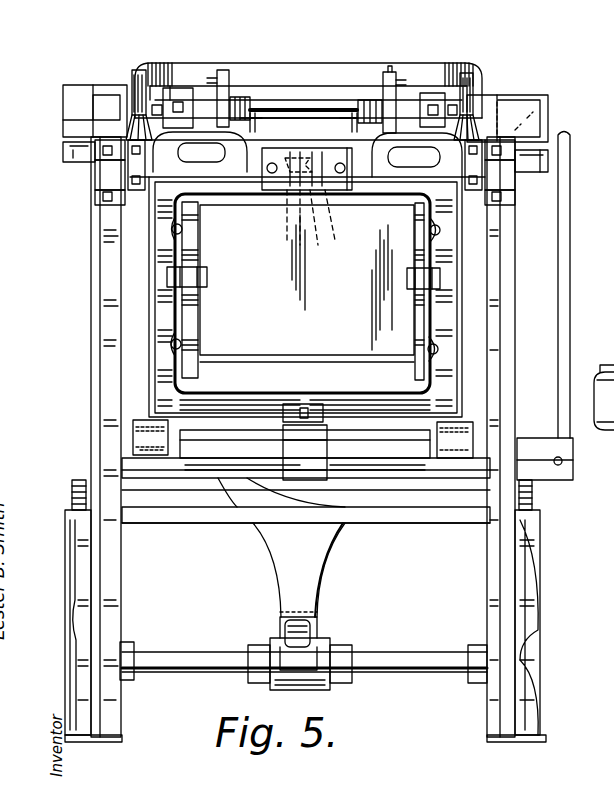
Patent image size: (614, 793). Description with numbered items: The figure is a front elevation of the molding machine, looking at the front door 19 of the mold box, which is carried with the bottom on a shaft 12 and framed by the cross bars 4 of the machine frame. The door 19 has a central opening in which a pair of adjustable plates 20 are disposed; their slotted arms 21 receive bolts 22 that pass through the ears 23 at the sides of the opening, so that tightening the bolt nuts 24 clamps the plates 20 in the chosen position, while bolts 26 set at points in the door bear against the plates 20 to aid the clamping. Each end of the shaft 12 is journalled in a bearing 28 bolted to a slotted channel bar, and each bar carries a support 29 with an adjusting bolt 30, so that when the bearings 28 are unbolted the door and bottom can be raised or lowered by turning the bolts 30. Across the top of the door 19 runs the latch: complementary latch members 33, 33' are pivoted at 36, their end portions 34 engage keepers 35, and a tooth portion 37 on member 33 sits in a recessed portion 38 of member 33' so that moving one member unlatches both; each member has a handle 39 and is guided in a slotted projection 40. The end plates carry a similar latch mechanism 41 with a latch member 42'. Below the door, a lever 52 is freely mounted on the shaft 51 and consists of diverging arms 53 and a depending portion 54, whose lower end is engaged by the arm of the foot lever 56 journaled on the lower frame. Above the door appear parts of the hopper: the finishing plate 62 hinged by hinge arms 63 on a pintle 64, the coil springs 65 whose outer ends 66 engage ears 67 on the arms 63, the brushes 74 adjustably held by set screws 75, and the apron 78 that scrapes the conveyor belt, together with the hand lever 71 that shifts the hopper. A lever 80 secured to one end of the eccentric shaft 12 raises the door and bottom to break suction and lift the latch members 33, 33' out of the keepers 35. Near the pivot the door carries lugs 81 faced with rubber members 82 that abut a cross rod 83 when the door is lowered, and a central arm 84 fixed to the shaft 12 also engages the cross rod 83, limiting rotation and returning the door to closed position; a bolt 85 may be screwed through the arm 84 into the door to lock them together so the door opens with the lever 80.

The cross bars 4 is at (120, 117).
The shaft 12 is at (412, 465).
The door 19 is at (165, 370).
The adjustable plates 20 is at (195, 318).
The slotted arms 21 is at (196, 240).
The bolts 22 is at (168, 277).
The ears 23 is at (185, 257).
The bolt nuts 24 is at (207, 277).
The bolts 26 is at (197, 345).
The bearing 28 is at (527, 440).
The support 29 is at (80, 594).
The adjusting bolt 30 is at (72, 493).
The latch member 33 is at (282, 215).
The latch member 33' is at (342, 215).
The end portion 34 is at (98, 168).
The keeper 35 is at (98, 192).
The pivot 36 is at (338, 165).
The tooth portion 37 is at (305, 222).
The recessed portion 38 is at (326, 228).
The handle 39 is at (350, 112).
The slotted projections 40 is at (555, 107).
The latch mechanism 41 is at (548, 155).
The latch member 42' is at (48, 168).
The shaft 51 is at (277, 622).
The lever 52 is at (283, 570).
The diverging arms 53 is at (230, 492).
The depending portion 54 is at (318, 604).
The foot lever 56 is at (325, 628).
The finishing plate 62 is at (362, 190).
The hinge arms 63 is at (232, 107).
The pintle 64 is at (303, 108).
The coil springs 65 is at (233, 140).
The spring outer end 66 is at (378, 85).
The ear 67 is at (396, 75).
The hand lever 71 is at (605, 352).
The brushes 74 is at (140, 112).
The set screw 75 is at (152, 88).
The apron 78 is at (205, 63).
The lever 80 is at (570, 292).
The lugs 81 is at (133, 430).
The rubber members 82 is at (180, 455).
The cross rod 83 is at (211, 525).
The arm 84 is at (328, 440).
The bolt 85 is at (283, 413).